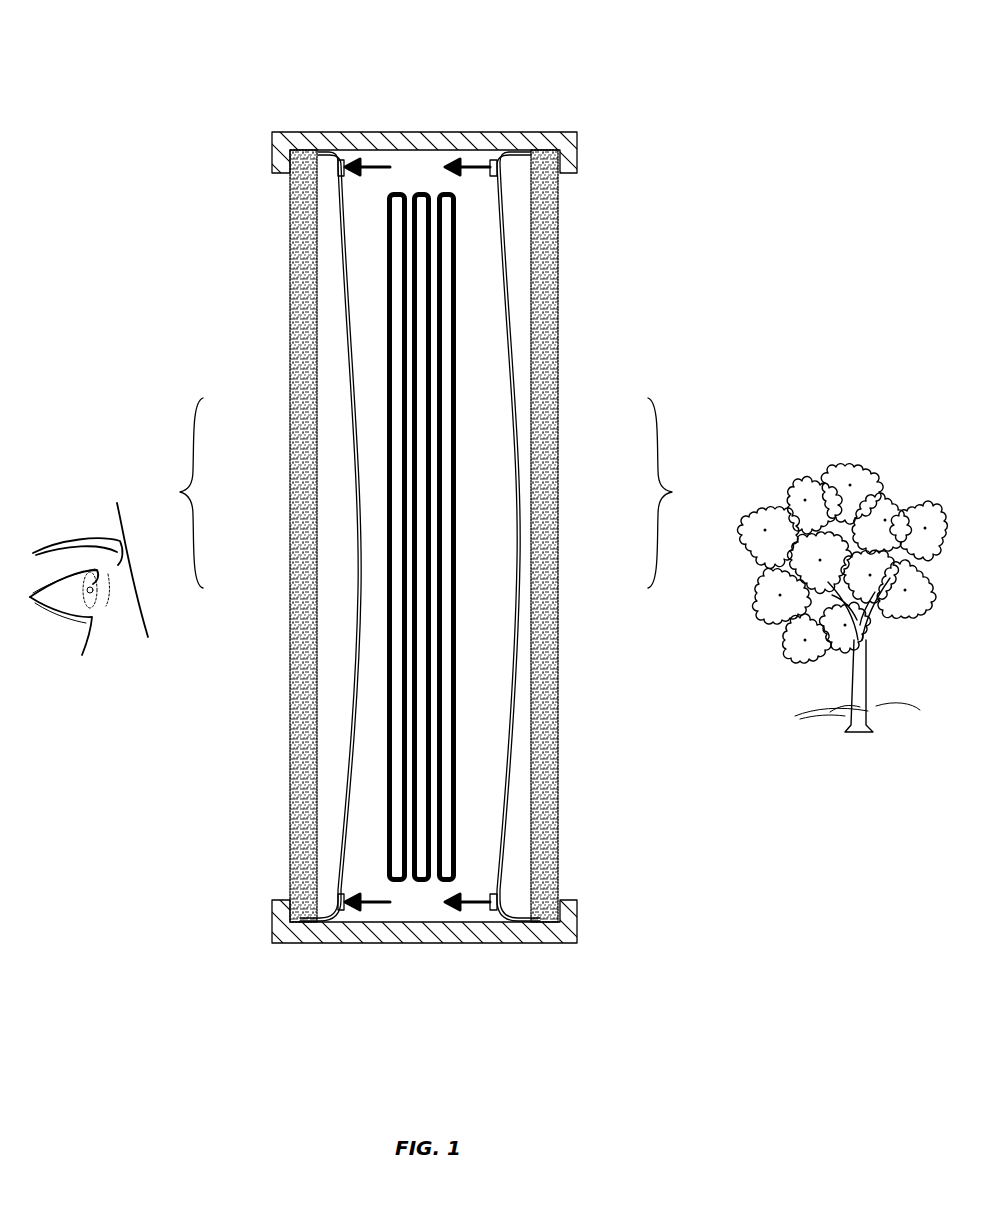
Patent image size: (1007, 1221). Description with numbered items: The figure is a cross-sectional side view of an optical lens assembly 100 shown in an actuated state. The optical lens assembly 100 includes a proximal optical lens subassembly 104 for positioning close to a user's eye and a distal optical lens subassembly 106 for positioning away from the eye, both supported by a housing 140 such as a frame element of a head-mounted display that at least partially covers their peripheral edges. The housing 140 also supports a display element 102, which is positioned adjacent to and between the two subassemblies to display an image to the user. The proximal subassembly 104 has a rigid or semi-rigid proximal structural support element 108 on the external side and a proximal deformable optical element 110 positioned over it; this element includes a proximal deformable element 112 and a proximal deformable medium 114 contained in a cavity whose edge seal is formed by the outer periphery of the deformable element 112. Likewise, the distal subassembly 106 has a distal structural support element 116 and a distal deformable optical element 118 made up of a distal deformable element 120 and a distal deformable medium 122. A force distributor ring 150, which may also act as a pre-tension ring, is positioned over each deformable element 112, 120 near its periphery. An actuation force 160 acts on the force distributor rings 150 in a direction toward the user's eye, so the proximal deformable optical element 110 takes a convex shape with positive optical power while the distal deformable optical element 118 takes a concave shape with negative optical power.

The optical lens assembly 100 is at (200, 46).
The display element 102 is at (383, 768).
The proximal optical lens subassembly 104 is at (246, 802).
The distal optical lens subassembly 106 is at (597, 791).
The proximal structural support element 108 is at (305, 284).
The proximal deformable optical element 110 is at (180, 492).
The proximal deformable element 112 is at (355, 463).
The proximal deformable medium 114 is at (335, 586).
The distal structural support element 116 is at (540, 273).
The distal deformable optical element 118 is at (672, 492).
The distal deformable element 120 is at (520, 474).
The distal deformable medium 122 is at (523, 611).
The housing 140 is at (561, 140).
The force distributor ring 150 is at (342, 159).
The actuation force 160 is at (386, 164).